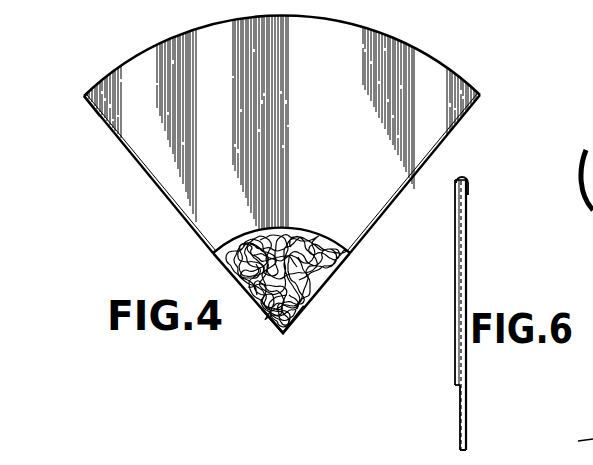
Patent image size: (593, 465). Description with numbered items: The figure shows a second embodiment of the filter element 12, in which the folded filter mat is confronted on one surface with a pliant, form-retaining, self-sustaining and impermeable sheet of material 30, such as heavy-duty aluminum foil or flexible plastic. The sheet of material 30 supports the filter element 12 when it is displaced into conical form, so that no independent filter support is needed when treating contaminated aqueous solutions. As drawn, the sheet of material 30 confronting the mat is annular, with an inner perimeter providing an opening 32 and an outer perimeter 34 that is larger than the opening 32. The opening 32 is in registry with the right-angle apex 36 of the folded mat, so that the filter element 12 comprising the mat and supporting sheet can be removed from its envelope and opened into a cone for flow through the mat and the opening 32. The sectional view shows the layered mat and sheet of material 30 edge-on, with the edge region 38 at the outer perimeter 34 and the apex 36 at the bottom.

In FIG. 4, the filter element 12 is at (325, 278).
In FIG. 6, the filter element 12 is at (467, 395).
In FIG. 4, the sheet of material 30 is at (170, 161).
In FIG. 6, the sheet of material 30 is at (455, 315).
In FIG. 4, the opening 32 is at (225, 258).
In FIG. 6, the opening 32 is at (457, 385).
In FIG. 4, the outer perimeter 34 is at (84, 97).
In FIG. 6, the outer perimeter 34 is at (456, 181).
In FIG. 4, the right-angle apex 36 is at (266, 312).
In FIG. 6, the right-angle apex 36 is at (467, 427).
In FIG. 6, the tab 38 is at (469, 188).